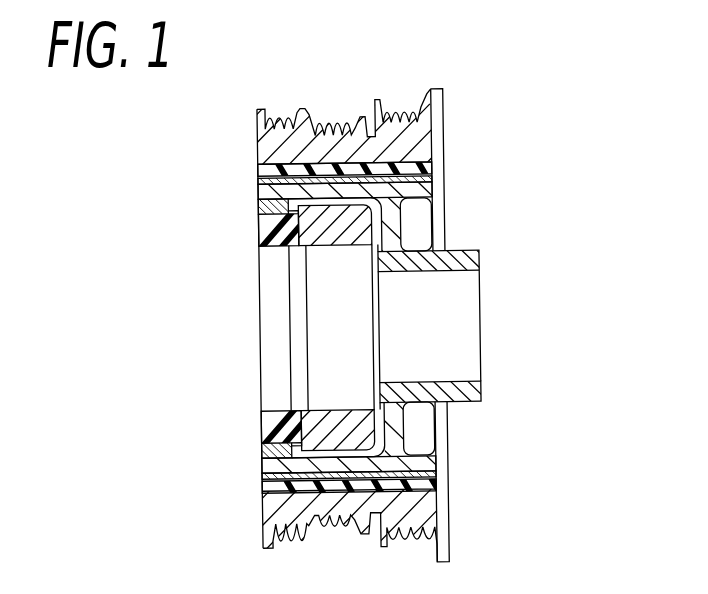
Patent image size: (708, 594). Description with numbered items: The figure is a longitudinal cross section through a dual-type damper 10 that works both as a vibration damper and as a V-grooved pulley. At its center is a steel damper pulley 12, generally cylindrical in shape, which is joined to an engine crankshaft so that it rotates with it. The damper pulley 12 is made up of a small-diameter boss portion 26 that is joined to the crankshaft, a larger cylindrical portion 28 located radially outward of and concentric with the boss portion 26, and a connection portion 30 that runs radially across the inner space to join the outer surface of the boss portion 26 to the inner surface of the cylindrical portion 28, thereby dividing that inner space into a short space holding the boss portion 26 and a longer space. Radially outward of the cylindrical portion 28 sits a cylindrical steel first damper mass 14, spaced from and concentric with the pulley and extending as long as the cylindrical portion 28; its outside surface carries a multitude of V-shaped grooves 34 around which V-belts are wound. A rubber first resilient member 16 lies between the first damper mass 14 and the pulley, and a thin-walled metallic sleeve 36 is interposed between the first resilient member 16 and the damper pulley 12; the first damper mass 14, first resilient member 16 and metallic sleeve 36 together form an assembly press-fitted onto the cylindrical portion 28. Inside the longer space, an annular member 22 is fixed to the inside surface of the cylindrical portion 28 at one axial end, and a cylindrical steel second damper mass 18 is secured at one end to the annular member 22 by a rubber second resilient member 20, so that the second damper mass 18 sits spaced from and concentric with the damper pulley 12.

The dual-type damper 10 is at (443, 58).
The damper pulley 12 is at (485, 314).
The first damper mass 14 is at (427, 119).
The first resilient member 16 is at (417, 170).
The second damper mass 18 is at (332, 240).
The second resilient member 20 is at (262, 222).
The annular member 22 is at (268, 449).
The boss portion 26 is at (470, 262).
The cylindrical portion 28 is at (266, 190).
The connection portion 30 is at (392, 232).
The V-shaped grooves 34 is at (272, 114).
The metallic sleeve 36 is at (262, 178).